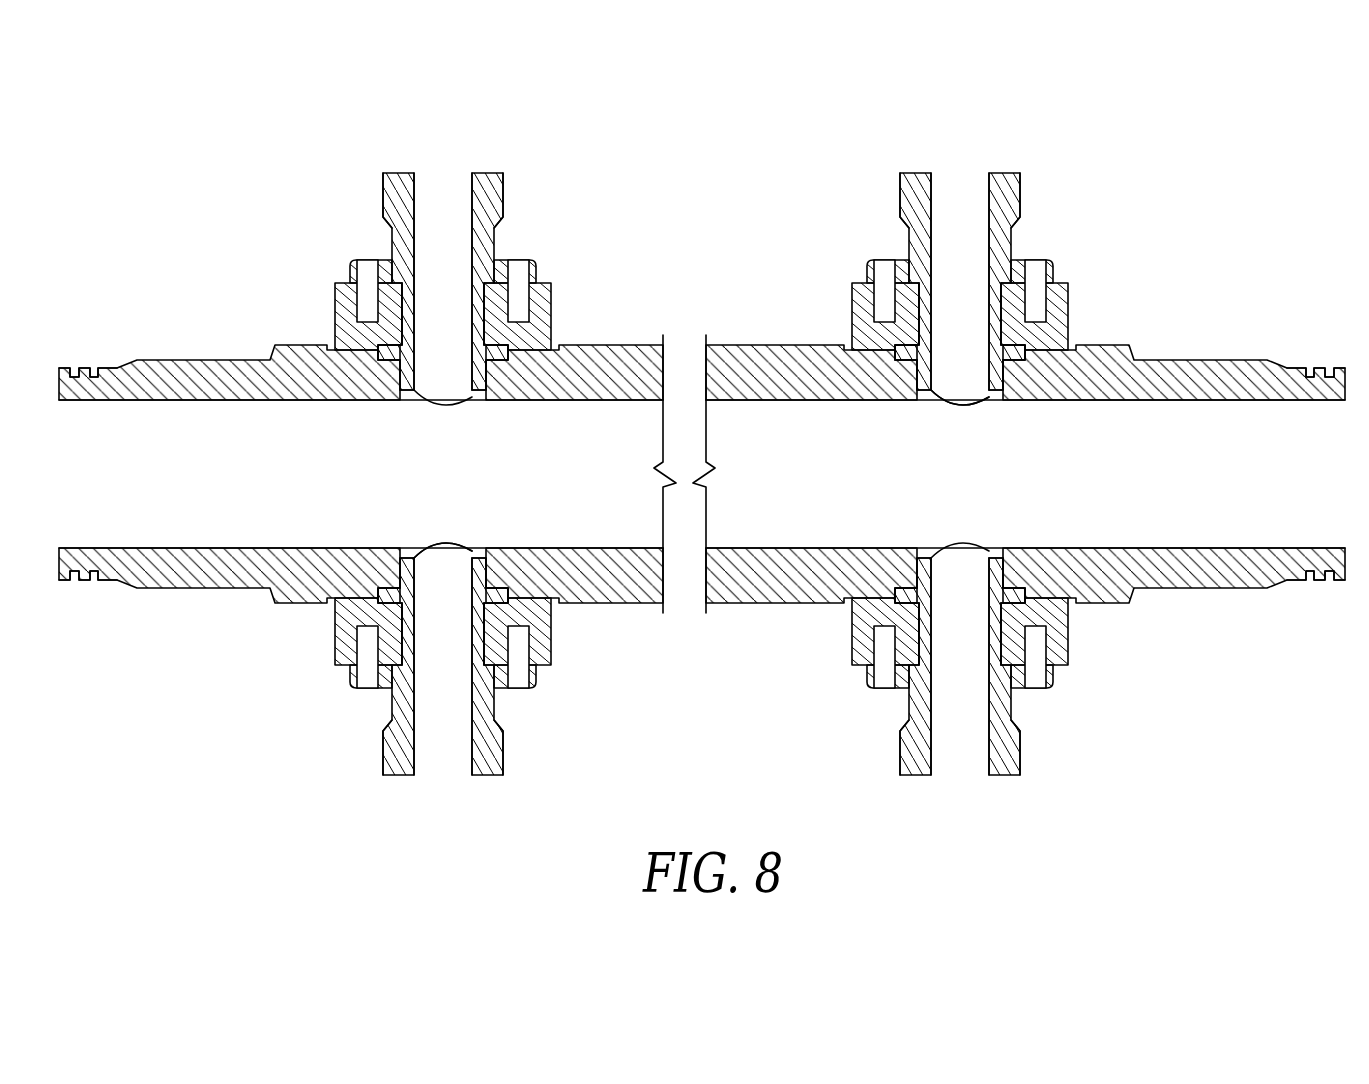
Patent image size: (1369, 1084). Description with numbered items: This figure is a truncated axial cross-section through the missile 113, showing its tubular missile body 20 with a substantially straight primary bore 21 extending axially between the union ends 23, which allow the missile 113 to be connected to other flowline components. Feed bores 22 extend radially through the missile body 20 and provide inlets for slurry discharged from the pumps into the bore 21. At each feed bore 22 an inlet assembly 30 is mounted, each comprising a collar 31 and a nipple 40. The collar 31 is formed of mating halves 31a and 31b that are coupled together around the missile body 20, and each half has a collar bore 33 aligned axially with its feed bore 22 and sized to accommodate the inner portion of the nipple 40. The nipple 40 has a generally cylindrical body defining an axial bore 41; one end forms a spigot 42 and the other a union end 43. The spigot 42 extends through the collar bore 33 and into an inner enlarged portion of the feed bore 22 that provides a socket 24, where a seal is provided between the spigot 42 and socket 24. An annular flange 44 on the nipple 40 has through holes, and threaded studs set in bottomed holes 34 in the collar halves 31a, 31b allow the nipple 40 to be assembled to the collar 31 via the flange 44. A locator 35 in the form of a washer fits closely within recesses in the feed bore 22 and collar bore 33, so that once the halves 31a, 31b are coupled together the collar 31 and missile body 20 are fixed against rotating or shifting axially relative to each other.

The missile 113 is at (216, 225).
The missile body 20 is at (178, 582).
The bore 21 is at (204, 491).
The feed bore 22 is at (452, 407).
The union end 23 is at (83, 368).
The socket 24 is at (445, 543).
The inlet assembly 30 is at (699, 475).
The collar 31 is at (1073, 326).
The collar half 31a is at (350, 327).
The collar half 31b is at (335, 620).
The collar bore 33 is at (917, 305).
The bottomed hole 34 is at (512, 293).
The locator 35 is at (388, 357).
The nipple 40 is at (380, 190).
The axial bore 41 is at (457, 306).
The spigot 42 is at (486, 578).
The union end 43 is at (1022, 190).
The annular flange 44 is at (540, 270).